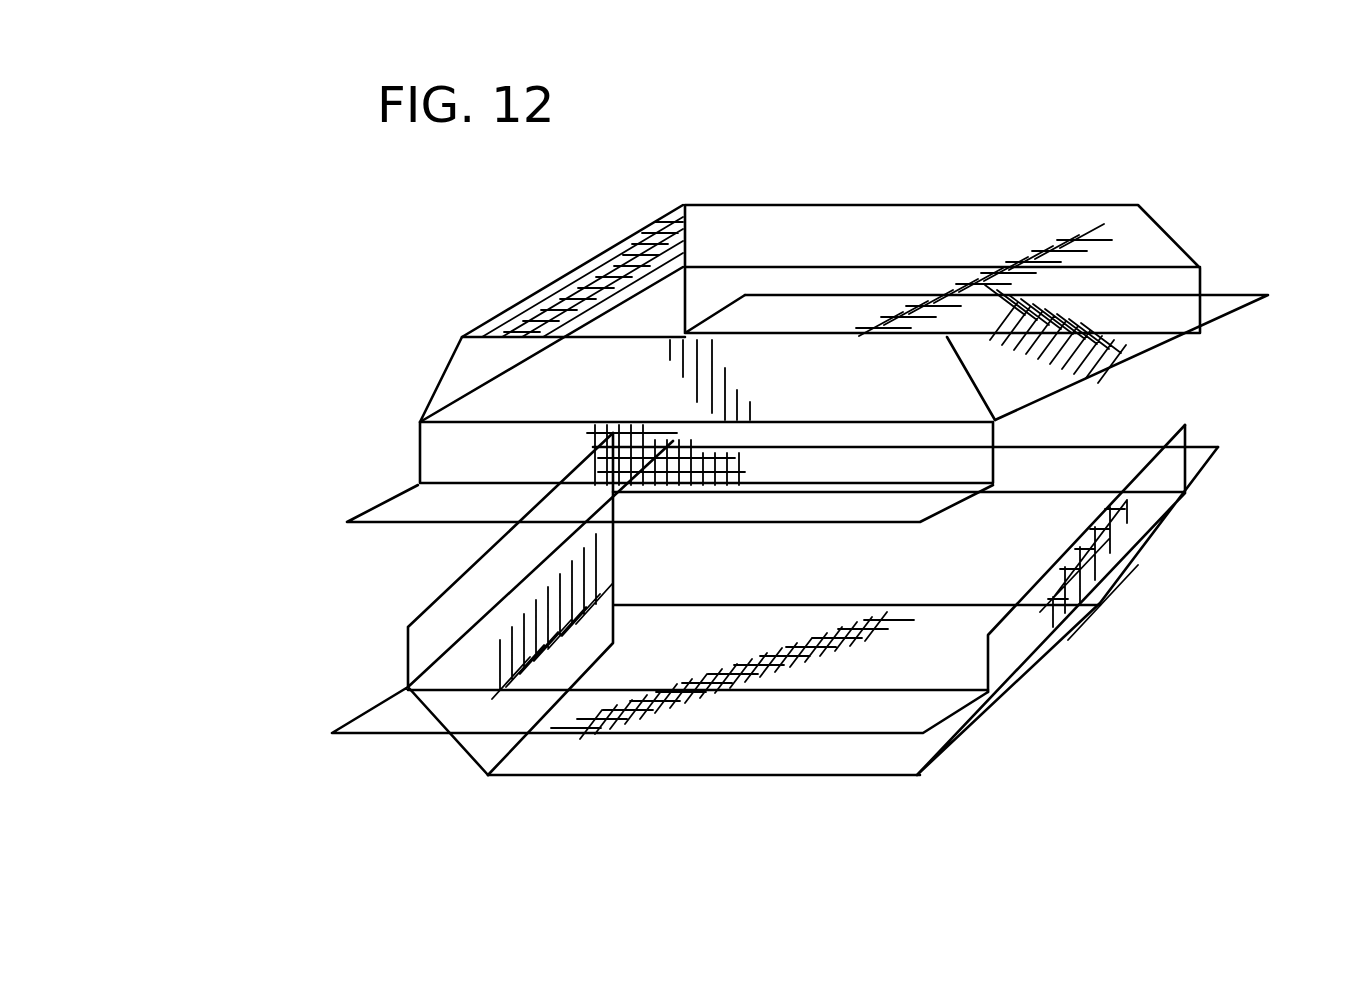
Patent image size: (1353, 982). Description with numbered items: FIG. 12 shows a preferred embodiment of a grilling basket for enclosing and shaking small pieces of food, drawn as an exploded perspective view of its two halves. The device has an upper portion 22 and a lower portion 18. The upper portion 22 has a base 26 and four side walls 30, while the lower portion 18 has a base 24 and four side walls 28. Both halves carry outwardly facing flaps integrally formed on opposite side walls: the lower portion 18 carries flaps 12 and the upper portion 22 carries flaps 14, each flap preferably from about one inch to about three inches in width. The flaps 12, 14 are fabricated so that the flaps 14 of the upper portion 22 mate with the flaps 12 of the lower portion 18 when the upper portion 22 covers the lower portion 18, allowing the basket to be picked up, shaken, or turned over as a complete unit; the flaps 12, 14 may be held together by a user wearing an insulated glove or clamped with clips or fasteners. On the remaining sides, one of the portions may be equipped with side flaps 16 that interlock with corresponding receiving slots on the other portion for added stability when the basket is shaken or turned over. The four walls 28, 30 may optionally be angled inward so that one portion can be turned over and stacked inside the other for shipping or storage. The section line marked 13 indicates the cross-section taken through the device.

The outwardly facing flaps 12 is at (953, 720).
The section line 13- 13 is at (835, 197).
The outwardly facing flaps 14 is at (1235, 318).
The side flaps 16 is at (403, 656).
The lower portion 18 is at (789, 654).
The upper portion 22 is at (785, 266).
The base 24 is at (620, 778).
The base 26 is at (1105, 200).
The side walls 28 is at (467, 756).
The side walls 30 is at (785, 200).